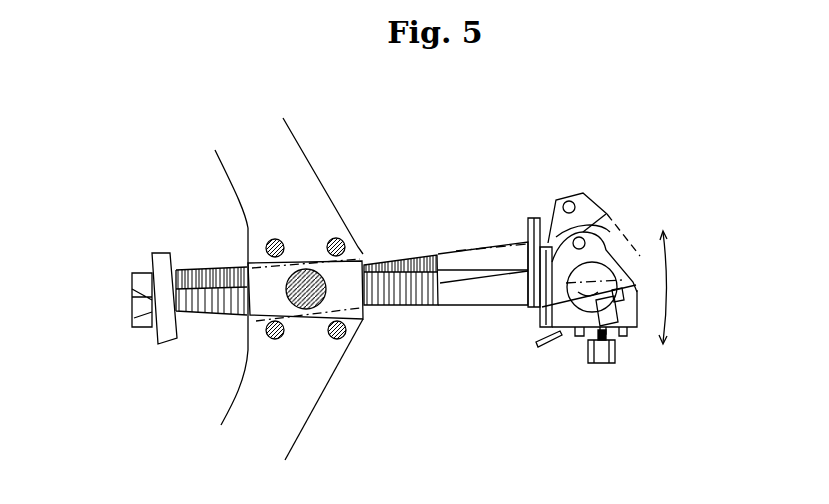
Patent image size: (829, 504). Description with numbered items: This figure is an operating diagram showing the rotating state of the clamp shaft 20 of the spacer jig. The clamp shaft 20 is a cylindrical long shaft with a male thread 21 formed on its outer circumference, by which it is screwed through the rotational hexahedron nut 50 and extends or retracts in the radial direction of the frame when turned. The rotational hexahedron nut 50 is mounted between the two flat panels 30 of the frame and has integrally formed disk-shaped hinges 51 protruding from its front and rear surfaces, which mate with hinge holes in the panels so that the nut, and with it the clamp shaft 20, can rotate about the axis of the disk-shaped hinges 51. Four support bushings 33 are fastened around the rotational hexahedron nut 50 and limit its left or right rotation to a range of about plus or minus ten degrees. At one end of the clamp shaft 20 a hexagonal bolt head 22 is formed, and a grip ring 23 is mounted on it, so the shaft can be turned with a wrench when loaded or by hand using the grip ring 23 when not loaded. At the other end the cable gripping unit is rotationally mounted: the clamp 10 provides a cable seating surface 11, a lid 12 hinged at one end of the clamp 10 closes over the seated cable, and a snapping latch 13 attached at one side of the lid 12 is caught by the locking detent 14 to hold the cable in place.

The clamp 10 is at (570, 320).
The cable seating surface 11 is at (605, 270).
The lid 12 is at (622, 268).
The snapping latch 13 is at (537, 343).
The locking detent 14 is at (575, 336).
The clamp shaft 20 is at (483, 287).
The male thread 21 is at (402, 313).
The hexagonal bolt head 22 is at (133, 282).
The grip ring 23 is at (158, 260).
The flat panels 30 is at (310, 188).
The support bushings 33 is at (337, 338).
The rotational hexahedron nut 50 is at (262, 305).
The disk-shaped hinges 51 is at (310, 272).